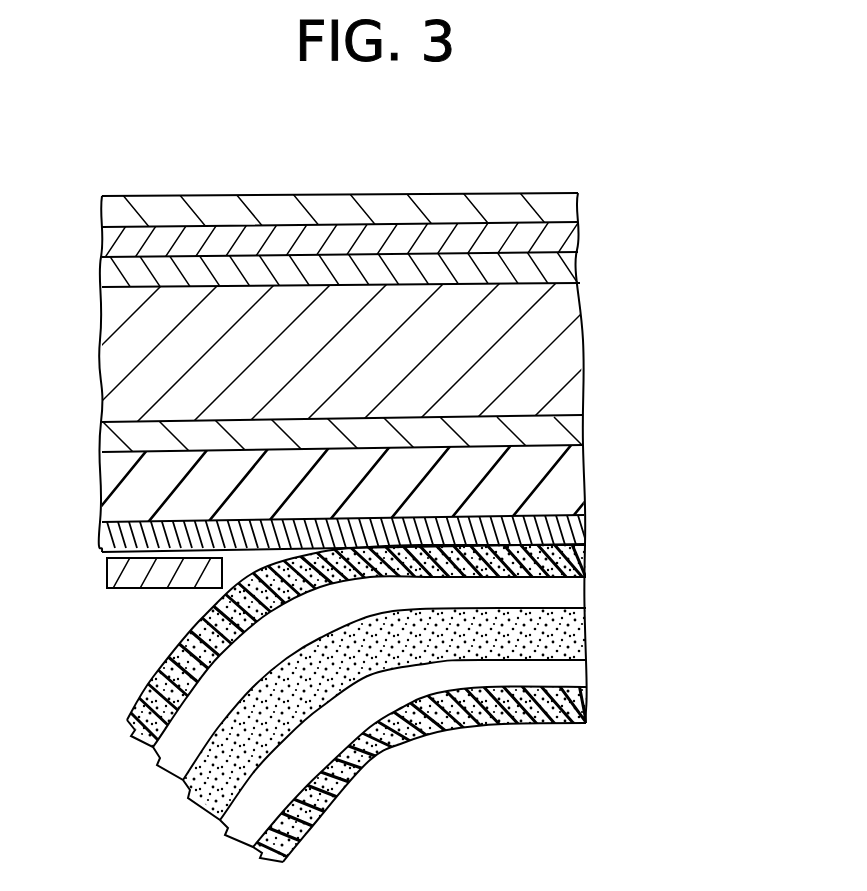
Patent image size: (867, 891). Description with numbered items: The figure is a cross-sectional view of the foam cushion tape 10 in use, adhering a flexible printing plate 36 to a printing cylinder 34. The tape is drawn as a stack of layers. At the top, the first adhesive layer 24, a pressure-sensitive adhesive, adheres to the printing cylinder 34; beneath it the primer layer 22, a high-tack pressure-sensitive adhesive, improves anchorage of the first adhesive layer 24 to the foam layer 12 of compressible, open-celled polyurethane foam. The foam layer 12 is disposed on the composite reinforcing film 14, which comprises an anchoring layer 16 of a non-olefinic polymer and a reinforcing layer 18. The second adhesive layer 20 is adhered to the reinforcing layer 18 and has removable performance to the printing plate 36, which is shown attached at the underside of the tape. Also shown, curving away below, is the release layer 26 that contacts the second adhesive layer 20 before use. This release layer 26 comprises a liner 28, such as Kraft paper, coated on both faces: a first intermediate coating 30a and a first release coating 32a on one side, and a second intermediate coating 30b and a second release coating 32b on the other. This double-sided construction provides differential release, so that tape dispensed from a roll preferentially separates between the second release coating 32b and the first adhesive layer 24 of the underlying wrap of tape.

The foam cushion tape 10 is at (334, 186).
The foam layer 12 is at (583, 340).
The composite reinforcing film 14 is at (90, 423).
The anchoring layer 16 is at (585, 423).
The reinforcing layer 18 is at (585, 485).
The second adhesive layer 20 is at (585, 518).
The primer layer 22 is at (578, 265).
The first adhesive layer 24 is at (578, 228).
The release layer 26 is at (683, 545).
The liner 28 is at (585, 635).
The first intermediate coating 30a is at (585, 595).
The second intermediate coating 30b is at (585, 675).
The first release coating 32a is at (585, 563).
The second release coating 32b is at (585, 710).
The printing cylinder 34 is at (578, 197).
The flexible printing plate 36 is at (106, 574).